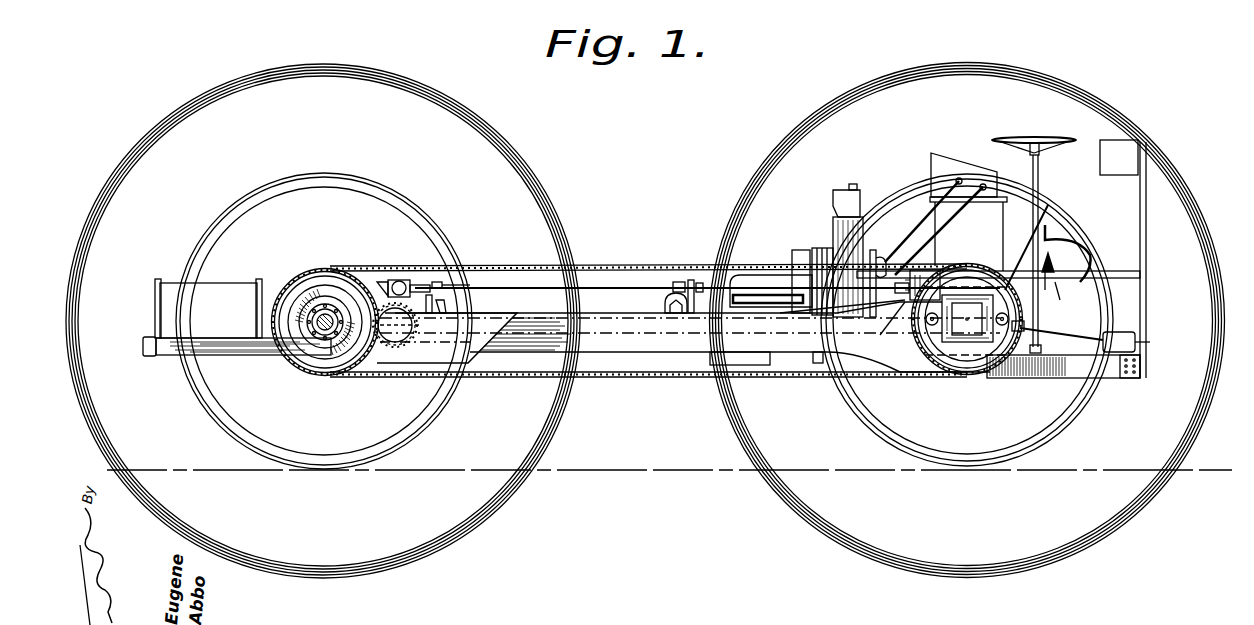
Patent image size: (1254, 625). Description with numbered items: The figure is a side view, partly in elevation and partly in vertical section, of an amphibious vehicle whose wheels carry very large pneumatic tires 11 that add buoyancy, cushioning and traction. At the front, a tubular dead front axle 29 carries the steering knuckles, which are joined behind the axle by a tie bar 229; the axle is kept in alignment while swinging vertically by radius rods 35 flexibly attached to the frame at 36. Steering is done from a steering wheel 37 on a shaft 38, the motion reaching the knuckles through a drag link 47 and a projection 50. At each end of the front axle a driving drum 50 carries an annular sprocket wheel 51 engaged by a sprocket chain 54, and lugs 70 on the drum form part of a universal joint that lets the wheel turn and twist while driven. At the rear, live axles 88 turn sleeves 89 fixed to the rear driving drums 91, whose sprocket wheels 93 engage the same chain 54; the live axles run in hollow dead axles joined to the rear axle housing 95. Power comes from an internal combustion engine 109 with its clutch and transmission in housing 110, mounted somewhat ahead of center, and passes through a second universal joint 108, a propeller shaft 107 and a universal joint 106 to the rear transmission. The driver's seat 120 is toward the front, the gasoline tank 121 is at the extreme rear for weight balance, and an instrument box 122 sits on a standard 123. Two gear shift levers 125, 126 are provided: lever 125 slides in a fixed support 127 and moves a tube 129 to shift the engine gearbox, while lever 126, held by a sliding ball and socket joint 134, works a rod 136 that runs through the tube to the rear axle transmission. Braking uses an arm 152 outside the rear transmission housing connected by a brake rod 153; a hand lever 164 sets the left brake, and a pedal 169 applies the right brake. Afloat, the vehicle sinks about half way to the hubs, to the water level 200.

The pneumatic tire 11 is at (489, 510).
The dead front axle 29 is at (961, 345).
The radius rod 35 is at (1061, 334).
The flexible attachment of radius rods 36 is at (1136, 343).
The steering wheel 37 is at (1043, 138).
The steering shaft 38 is at (1039, 172).
The drag link 47 is at (1012, 316).
The driving drum 50 is at (943, 345).
The annular sprocket wheel 51 is at (933, 278).
The sprocket chain 54 is at (636, 270).
The lug 70 is at (626, 353).
The live axle 88 is at (317, 338).
The sleeve 89 is at (328, 335).
The driving drum 91 is at (333, 280).
The annular sprocket wheel 93 is at (378, 292).
The rear axle housing 95 is at (391, 300).
The universal joint 106 is at (456, 329).
The propeller shaft 107 is at (450, 313).
The second universal joint 108 is at (671, 293).
The internal combustion engine 109 is at (744, 278).
The clutch and transmission housing 110 is at (712, 313).
The driver's seat 120 is at (945, 160).
The gasoline tank 121 is at (213, 291).
The instrument box 122 is at (1126, 149).
The standard 123 is at (1143, 189).
The gear shift lever 125 is at (921, 210).
The gear shift lever 126 is at (951, 227).
The fixed support 127 is at (880, 256).
The tube 129 is at (706, 300).
The sliding ball and socket joint 134 is at (857, 312).
The rod 136 is at (650, 288).
The arm 152 is at (397, 328).
The brake rod 153 is at (604, 332).
The hand lever 164 is at (1047, 208).
The right brake pedal 169 is at (1078, 241).
The water level 200 is at (739, 473).
The tie bar 229 is at (930, 343).